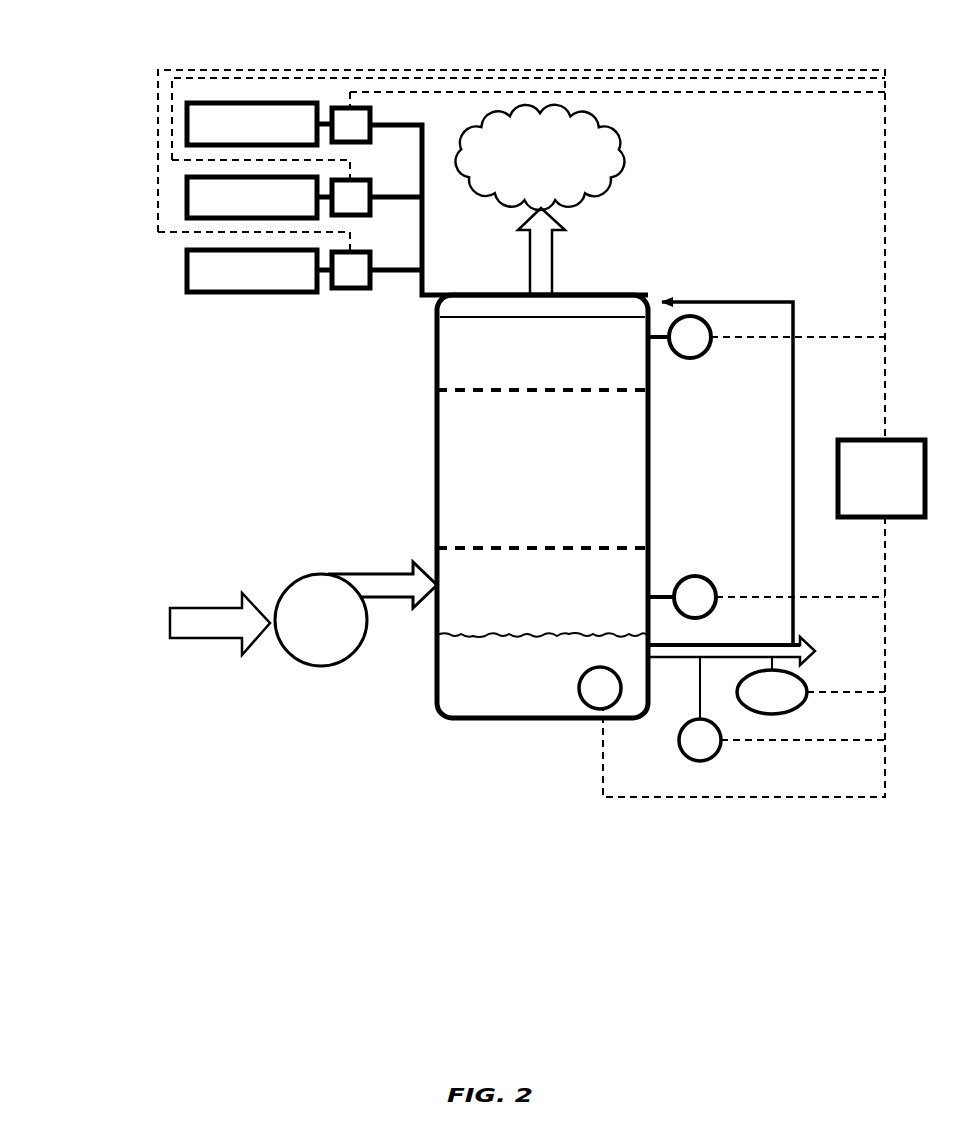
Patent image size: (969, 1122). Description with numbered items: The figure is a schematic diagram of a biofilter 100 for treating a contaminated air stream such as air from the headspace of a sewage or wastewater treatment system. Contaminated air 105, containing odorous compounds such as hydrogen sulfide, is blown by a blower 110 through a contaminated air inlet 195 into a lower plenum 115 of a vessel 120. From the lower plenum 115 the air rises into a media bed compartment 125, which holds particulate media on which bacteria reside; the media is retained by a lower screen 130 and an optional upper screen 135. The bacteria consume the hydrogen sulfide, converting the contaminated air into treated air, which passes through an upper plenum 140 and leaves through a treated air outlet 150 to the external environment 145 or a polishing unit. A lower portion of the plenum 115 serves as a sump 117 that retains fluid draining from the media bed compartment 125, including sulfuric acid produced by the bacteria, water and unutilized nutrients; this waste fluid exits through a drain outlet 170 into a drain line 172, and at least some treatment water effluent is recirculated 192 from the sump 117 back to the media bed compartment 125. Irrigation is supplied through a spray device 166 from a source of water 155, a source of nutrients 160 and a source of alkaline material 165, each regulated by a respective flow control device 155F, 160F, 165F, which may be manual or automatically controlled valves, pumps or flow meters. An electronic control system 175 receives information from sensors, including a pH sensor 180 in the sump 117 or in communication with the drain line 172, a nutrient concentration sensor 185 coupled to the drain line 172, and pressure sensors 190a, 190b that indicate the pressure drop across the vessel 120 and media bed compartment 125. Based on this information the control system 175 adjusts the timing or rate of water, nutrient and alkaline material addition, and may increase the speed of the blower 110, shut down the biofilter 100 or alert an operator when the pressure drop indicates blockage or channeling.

The biofilter 100 is at (120, 152).
The contaminated air 105 is at (186, 638).
The blower 110 is at (301, 628).
The lower plenum 115 is at (521, 608).
The sump 117 is at (521, 693).
The vessel 120 is at (437, 478).
The media bed compartment 125 is at (518, 480).
The lower screen 130 is at (583, 548).
The upper screen 135 is at (495, 392).
The upper plenum 140 is at (521, 360).
The external environment 145 is at (516, 160).
The treated air outlet 150 is at (530, 290).
The source of water 155 is at (233, 137).
The flow control device 155F is at (347, 128).
The source of nutrients 160 is at (233, 210).
The flow control device 160F is at (347, 200).
The source of alkaline material 165 is at (233, 283).
The flow control device 165F is at (347, 272).
The spray device 166 is at (436, 300).
The drain outlet 170 is at (650, 660).
The drain line 172 is at (722, 650).
The electronic control system 175 is at (862, 488).
The pH sensor 180 is at (588, 707).
The nutrient concentration sensor 185 is at (800, 705).
The pressure sensor 190a is at (713, 583).
The pressure sensor 190b is at (706, 352).
The recirculation 192 is at (740, 300).
The contaminated air inlet 195 is at (432, 594).